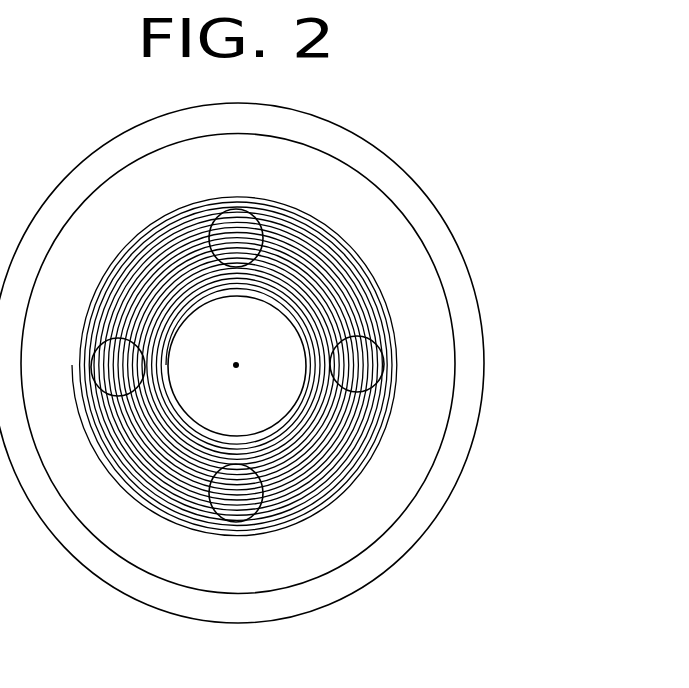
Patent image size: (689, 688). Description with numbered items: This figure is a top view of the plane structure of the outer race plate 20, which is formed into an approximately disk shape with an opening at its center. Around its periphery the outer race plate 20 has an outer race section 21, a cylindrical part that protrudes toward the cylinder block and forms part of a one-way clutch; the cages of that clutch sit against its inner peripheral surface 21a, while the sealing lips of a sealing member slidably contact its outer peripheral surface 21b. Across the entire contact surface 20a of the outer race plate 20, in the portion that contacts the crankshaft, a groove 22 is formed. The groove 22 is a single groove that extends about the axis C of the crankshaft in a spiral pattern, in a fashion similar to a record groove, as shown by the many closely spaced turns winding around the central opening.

The outer race plate 20 is at (476, 143).
The contact surface 20a is at (280, 512).
The groove 22 is at (234, 389).
The outer race section 21 is at (286, 363).
The inner peripheral surface 21a is at (437, 273).
The outer peripheral surface 21b is at (482, 312).
The axis C is at (238, 368).